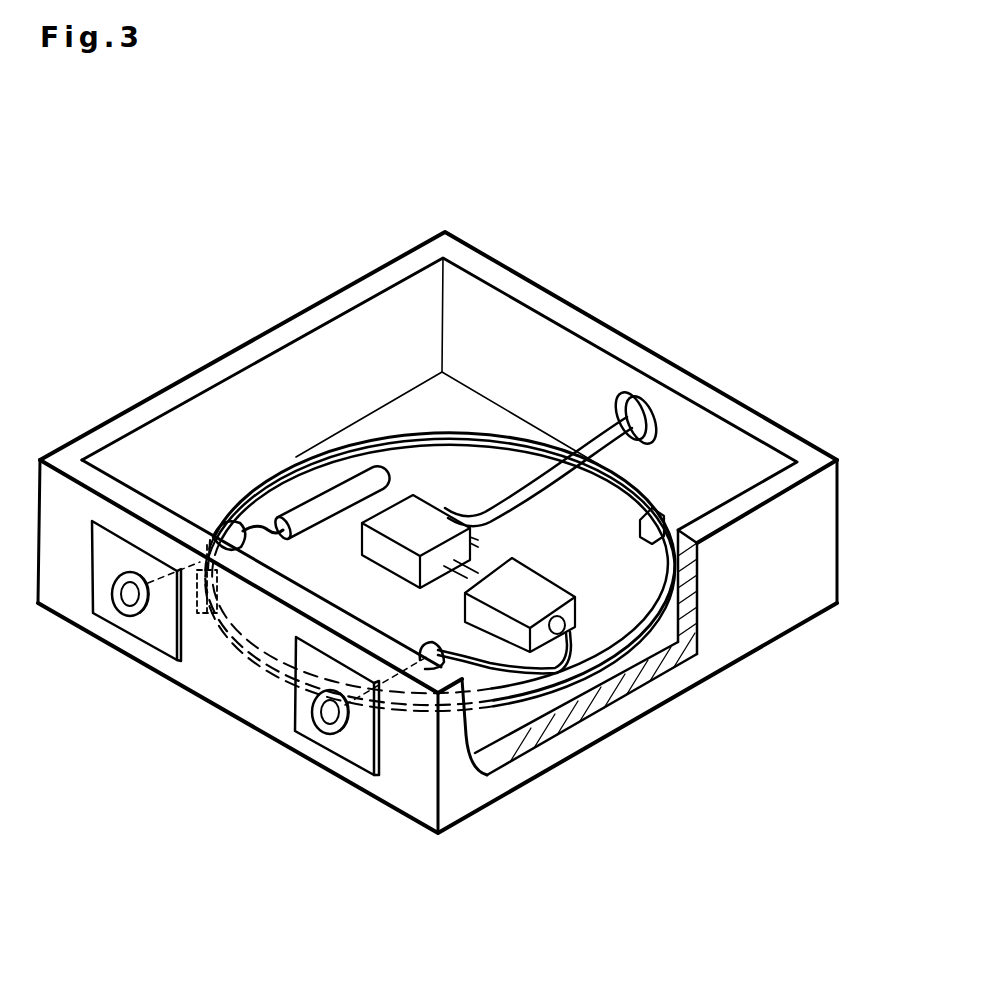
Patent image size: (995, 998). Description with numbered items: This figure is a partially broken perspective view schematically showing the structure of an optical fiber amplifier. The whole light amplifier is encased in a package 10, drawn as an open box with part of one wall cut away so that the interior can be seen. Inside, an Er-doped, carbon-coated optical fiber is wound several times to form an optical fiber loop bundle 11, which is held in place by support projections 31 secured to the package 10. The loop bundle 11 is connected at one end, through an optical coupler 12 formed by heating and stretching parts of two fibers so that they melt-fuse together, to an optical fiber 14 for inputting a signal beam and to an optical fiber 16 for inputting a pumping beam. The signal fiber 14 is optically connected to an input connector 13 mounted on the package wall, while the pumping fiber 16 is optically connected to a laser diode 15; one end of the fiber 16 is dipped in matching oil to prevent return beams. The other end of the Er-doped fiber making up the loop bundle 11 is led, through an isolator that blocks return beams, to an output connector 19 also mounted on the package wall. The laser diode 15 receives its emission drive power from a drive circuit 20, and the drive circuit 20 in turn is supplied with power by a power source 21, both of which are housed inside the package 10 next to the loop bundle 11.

The package 10 is at (777, 603).
The optical fiber loop bundle 11 is at (502, 430).
The optical coupler 12 is at (333, 493).
The input connector 13 is at (113, 617).
The optical fiber for inputting a signal beam 14 is at (248, 522).
The laser diode 15 is at (398, 565).
The optical fiber for inputting a pumping beam 16 is at (276, 545).
The output connector 19 is at (332, 745).
The drive circuit 20 is at (540, 578).
The power source 21 is at (640, 392).
The support projections 31 is at (655, 515).